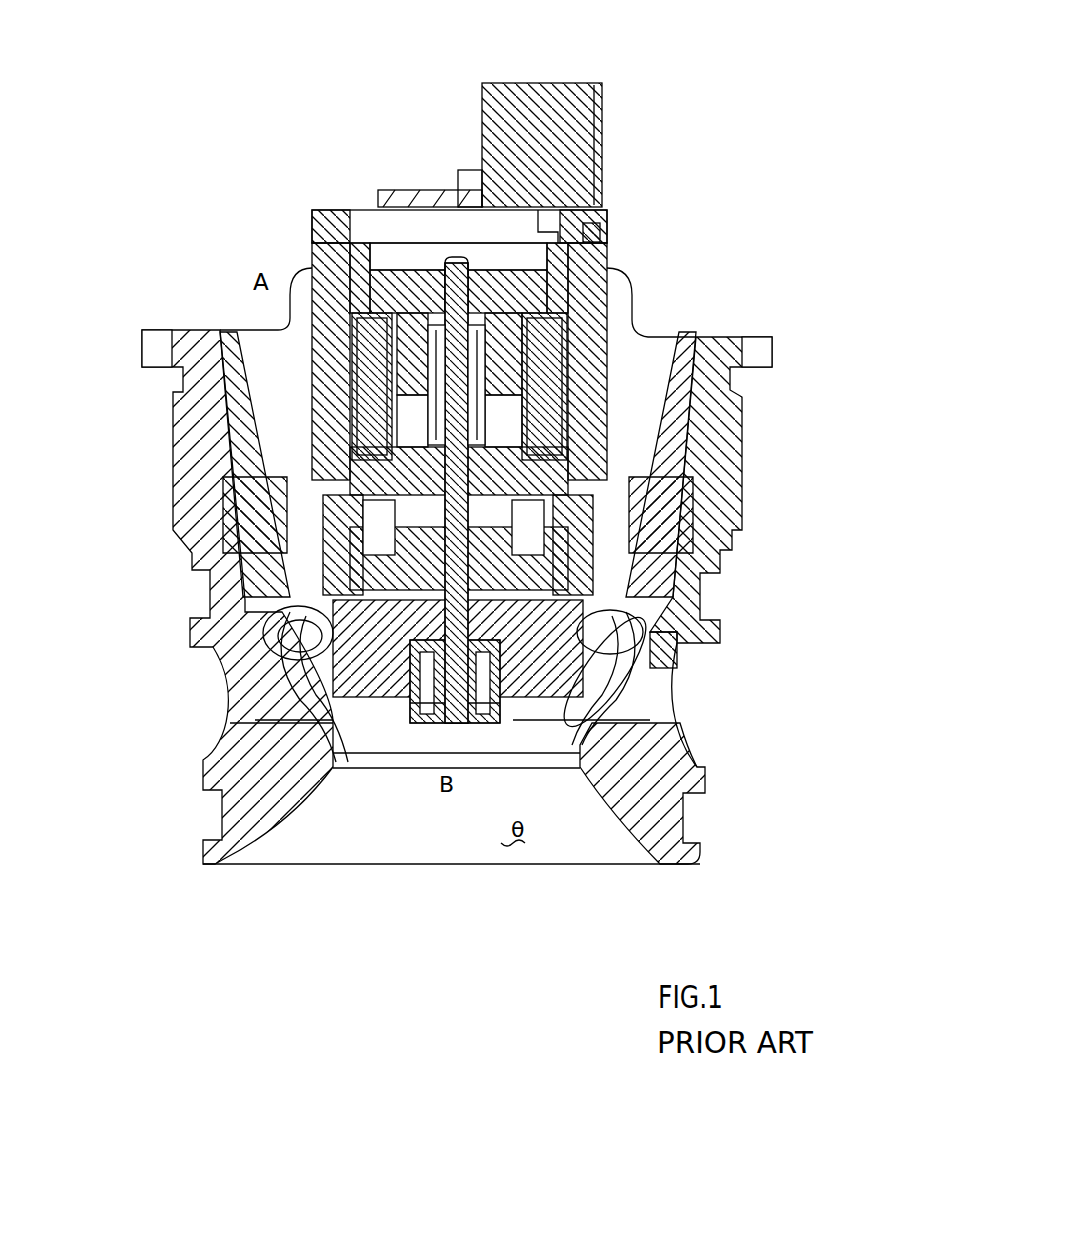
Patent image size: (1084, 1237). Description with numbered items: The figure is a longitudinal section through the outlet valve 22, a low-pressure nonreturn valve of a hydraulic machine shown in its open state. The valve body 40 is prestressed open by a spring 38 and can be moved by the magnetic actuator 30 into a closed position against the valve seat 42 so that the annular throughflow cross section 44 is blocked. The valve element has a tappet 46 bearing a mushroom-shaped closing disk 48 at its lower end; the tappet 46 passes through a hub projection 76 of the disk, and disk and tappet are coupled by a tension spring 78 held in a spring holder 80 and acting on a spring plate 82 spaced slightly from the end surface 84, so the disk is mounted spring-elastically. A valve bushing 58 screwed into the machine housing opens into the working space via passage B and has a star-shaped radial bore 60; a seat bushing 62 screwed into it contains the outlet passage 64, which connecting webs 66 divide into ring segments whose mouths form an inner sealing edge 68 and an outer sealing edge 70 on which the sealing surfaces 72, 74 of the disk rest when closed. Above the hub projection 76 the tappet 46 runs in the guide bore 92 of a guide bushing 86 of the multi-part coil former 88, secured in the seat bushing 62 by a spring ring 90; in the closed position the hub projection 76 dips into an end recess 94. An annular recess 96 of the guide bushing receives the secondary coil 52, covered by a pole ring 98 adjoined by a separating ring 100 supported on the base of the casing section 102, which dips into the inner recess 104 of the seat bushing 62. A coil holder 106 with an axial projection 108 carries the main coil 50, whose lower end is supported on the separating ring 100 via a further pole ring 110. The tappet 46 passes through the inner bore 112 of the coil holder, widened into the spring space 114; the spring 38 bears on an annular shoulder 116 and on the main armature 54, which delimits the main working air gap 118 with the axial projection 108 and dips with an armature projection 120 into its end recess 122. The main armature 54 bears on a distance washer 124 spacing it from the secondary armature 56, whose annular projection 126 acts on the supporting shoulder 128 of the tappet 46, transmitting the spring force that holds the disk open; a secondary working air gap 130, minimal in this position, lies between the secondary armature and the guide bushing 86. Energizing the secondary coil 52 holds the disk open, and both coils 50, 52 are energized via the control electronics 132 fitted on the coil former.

The outlet valve 22 is at (672, 117).
The magnetic actuator 30 is at (622, 412).
The spring 38 is at (540, 325).
The valve body 40 is at (236, 690).
The valve seat 42 is at (312, 625).
The annular throughflow cross section 44 is at (236, 575).
The tappet 46 is at (300, 450).
The closing disk 48 is at (330, 712).
The main coil 50 is at (290, 295).
The secondary coil 52 is at (320, 503).
The main armature 54 is at (300, 396).
The secondary armature 56 is at (250, 485).
The valve bushing 58 is at (234, 788).
The radial bore 60 is at (232, 778).
The seat bushing 62 is at (308, 440).
The outlet passage 64 is at (722, 340).
The connecting webs 66 is at (652, 550).
The inner sealing edge 68 is at (642, 625).
The outer sealing edge 70 is at (650, 668).
The sealing surface 72 is at (562, 655).
The sealing surface 74 is at (522, 652).
The hub projection 76 is at (300, 655).
The tension spring 78 is at (320, 770).
The spring holder 80 is at (333, 740).
The spring plate 82 is at (405, 718).
The end surface 84 is at (300, 740).
The guide bushing 86 is at (615, 655).
The coil former 88 is at (505, 715).
The spring ring 90 is at (642, 560).
The guide bore 92 is at (242, 600).
The end recess 94 is at (462, 705).
The annular recess 96 is at (562, 690).
The pole ring 98 is at (652, 585).
The separating ring 100 is at (562, 488).
The casing section 102 is at (642, 440).
The inner recess 104 is at (657, 392).
The coil holder 106 is at (530, 320).
The axial projection 108 is at (410, 340).
The pole ring 110 is at (582, 470).
The inner bore 112 is at (470, 300).
The spring space 114 is at (562, 345).
The annular shoulder 116 is at (453, 300).
The main working air gap 118 is at (262, 380).
The armature projection 120 is at (737, 352).
The end recess 122 is at (280, 322).
The distance washer 124 is at (602, 525).
The annular projection 126 is at (310, 548).
The supporting shoulder 128 is at (272, 520).
The secondary working air gap 130 is at (682, 605).
The control electronics 132 is at (522, 125).